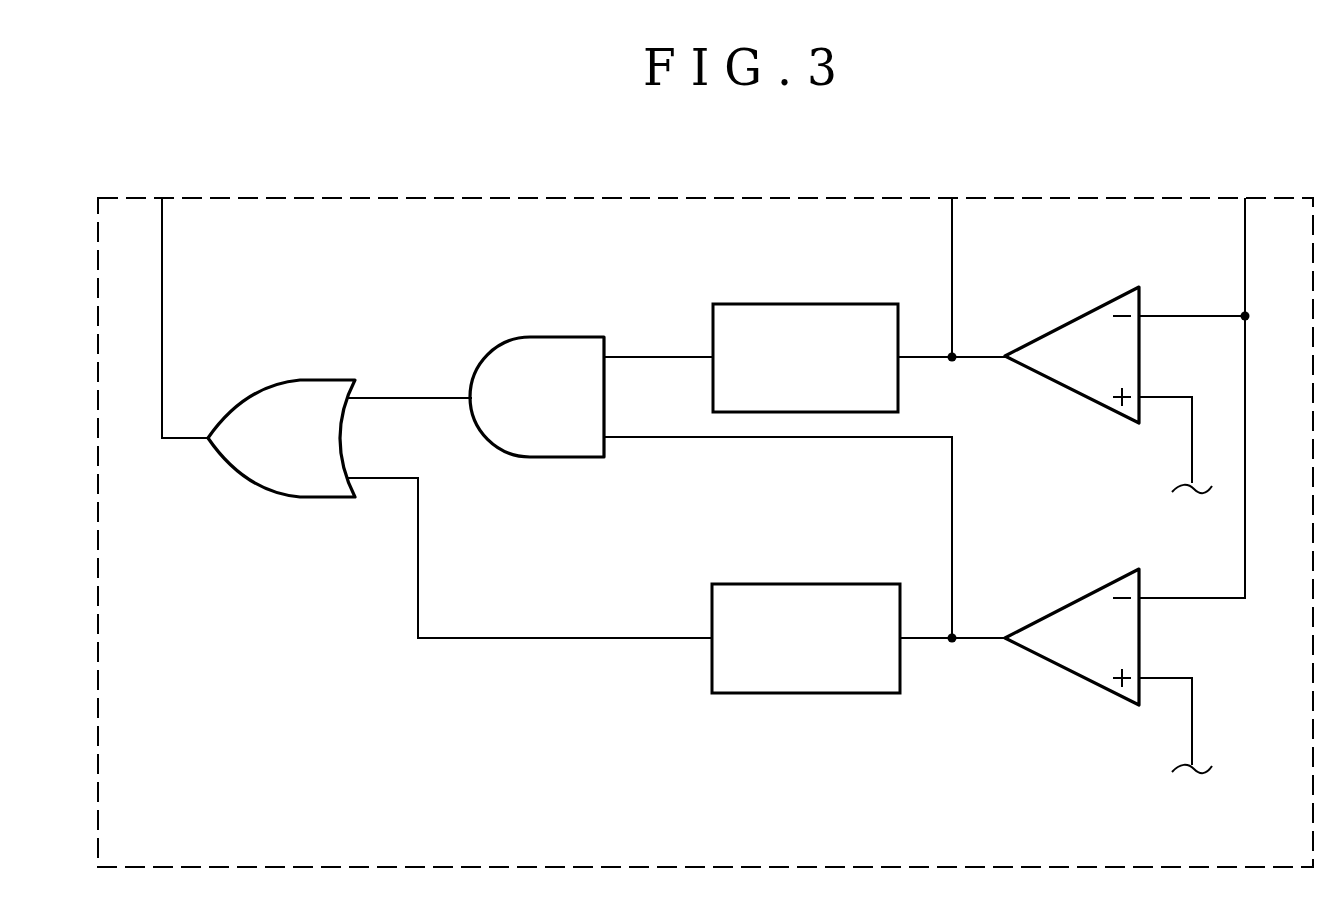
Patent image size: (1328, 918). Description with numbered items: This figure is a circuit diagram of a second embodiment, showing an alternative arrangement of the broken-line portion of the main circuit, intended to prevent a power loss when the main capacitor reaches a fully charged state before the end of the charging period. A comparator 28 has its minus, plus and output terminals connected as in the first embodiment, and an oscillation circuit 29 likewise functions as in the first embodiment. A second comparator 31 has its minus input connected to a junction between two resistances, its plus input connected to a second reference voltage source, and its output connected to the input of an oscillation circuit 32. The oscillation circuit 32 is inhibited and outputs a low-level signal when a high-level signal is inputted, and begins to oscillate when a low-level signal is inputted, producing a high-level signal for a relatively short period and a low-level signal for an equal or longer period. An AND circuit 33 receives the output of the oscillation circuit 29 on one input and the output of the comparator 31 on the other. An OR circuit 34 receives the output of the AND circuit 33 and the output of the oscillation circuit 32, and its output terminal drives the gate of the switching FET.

The comparator 28 is at (1094, 308).
The oscillation circuit 29 is at (852, 304).
The comparator 31 is at (1095, 589).
The oscillation circuit 32 is at (852, 584).
The AND circuit 33 is at (552, 337).
The OR circuit 34 is at (305, 380).